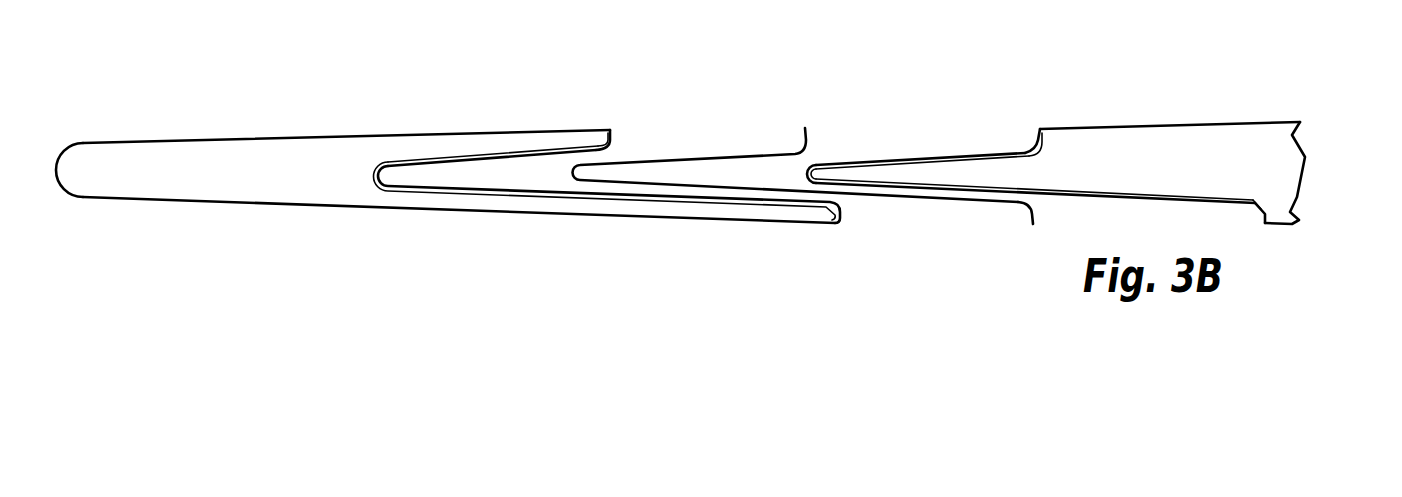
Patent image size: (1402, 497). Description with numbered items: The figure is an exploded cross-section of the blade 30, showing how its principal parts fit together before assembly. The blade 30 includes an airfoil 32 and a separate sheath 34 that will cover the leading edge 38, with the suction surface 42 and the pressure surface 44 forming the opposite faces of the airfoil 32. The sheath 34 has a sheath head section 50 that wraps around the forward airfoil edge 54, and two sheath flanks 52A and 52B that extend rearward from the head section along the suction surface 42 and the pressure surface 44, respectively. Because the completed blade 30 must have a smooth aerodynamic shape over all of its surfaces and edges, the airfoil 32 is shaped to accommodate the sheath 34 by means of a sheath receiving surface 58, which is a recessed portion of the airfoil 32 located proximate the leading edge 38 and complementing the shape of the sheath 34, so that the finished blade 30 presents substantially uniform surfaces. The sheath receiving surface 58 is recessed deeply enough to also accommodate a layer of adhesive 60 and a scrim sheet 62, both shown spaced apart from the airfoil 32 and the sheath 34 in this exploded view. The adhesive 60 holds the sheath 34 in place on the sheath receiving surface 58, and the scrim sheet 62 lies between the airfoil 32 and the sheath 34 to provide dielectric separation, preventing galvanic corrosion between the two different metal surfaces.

The blade 30 is at (1307, 143).
The airfoil 32 is at (1223, 67).
The sheath 34 is at (165, 136).
The leading edge 38 is at (62, 194).
The suction surface 42 is at (1160, 130).
The pressure surface 44 is at (1280, 225).
The sheath head section 50 is at (168, 168).
The sheath flank 52A is at (425, 142).
The sheath flank 52B is at (418, 198).
The forward airfoil edge 54 is at (850, 168).
The sheath receiving surface 58 is at (818, 163).
The adhesive 60 is at (615, 141).
The scrim sheet 62 is at (743, 154).